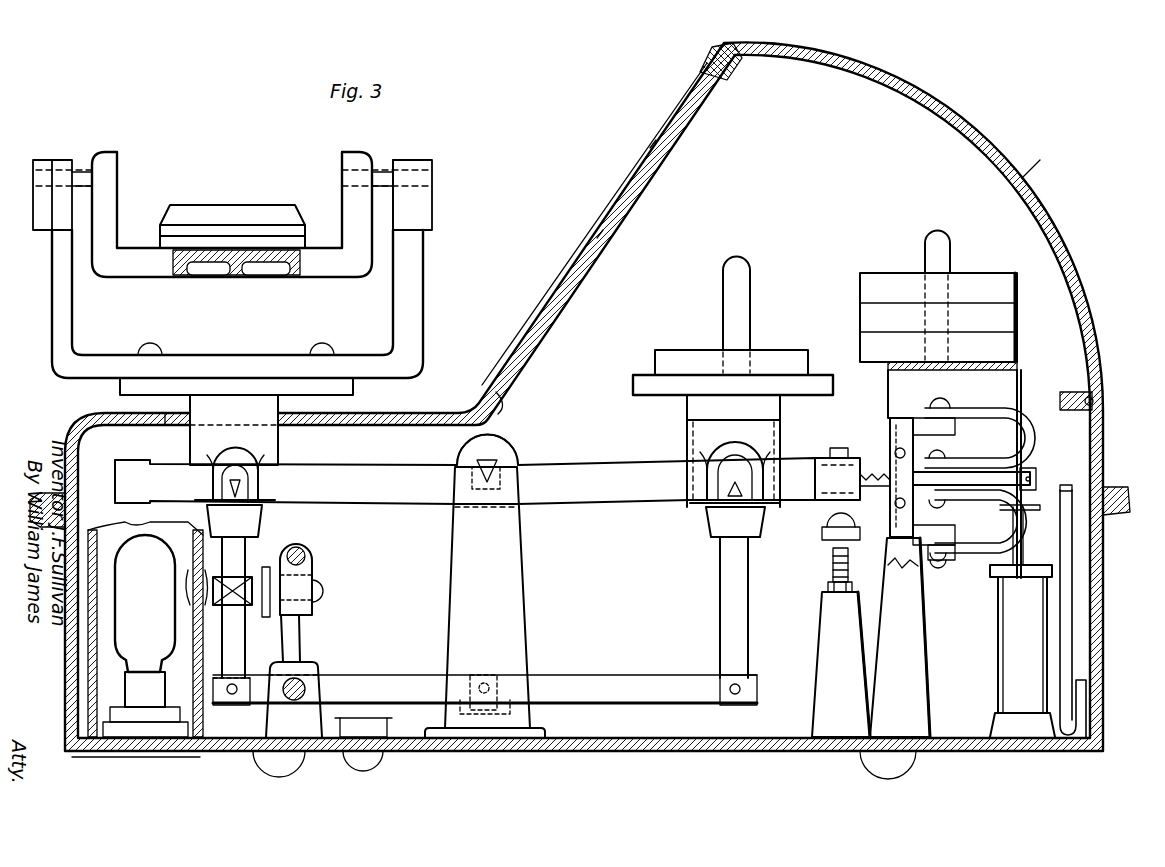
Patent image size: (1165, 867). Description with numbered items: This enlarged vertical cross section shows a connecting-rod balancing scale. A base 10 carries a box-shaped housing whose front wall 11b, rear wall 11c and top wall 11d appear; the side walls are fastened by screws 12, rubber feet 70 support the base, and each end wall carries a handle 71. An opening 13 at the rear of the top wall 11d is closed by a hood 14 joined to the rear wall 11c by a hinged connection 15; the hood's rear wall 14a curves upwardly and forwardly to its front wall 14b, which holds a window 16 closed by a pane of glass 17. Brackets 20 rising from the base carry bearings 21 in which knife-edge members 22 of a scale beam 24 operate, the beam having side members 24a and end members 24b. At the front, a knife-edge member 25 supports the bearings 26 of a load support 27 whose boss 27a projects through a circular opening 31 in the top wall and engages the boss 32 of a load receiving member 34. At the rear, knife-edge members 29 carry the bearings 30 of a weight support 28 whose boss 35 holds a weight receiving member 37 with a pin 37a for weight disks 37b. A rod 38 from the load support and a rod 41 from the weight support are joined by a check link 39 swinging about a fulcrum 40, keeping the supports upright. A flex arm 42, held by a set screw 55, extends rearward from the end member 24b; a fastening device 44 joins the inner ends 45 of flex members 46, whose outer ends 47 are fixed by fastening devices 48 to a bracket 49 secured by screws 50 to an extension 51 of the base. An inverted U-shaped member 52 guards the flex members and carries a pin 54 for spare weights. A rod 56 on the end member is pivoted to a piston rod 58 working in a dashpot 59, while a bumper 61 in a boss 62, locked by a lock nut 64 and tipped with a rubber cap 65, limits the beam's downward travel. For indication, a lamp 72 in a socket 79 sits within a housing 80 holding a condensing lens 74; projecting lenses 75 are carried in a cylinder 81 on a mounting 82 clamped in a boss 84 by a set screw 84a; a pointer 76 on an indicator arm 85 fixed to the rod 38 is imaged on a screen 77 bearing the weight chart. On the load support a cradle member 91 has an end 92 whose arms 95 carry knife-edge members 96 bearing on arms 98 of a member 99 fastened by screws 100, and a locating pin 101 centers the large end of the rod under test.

The base 10 is at (615, 752).
The front wall 11b is at (70, 752).
The rear wall 11c is at (1105, 614).
The top wall 11d is at (385, 415).
The screws 12 is at (365, 770).
The opening 13 is at (500, 400).
The hood or housing extension 14 is at (1070, 229).
The rear wall of hood 14a is at (1022, 178).
The front wall of hood 14b is at (690, 103).
The hinged connection 15 is at (1095, 400).
The window or sight opening 16 is at (650, 148).
The pane of transparent glass 17 is at (597, 238).
The brackets 20 is at (508, 592).
The bearing 21 is at (470, 490).
The knife-edge members 22 is at (500, 478).
The scale beam 24 is at (561, 450).
The side members 24a is at (372, 525).
The end members 24b is at (818, 455).
The knife-edge member 25 is at (233, 488).
The bearings 26 is at (245, 472).
The load support or outrider 27 is at (263, 523).
The boss 27a is at (235, 456).
The weight support or outrider 28 is at (735, 461).
The knife-edge members 29 is at (710, 519).
The bearings 30 is at (728, 462).
The circular opening 31 is at (160, 412).
The boss 32 is at (245, 408).
The load receiving member 34 is at (165, 385).
The boss 35 is at (690, 428).
The weight receiving member 37 is at (640, 386).
The pin 37a is at (722, 296).
The weights 37b is at (862, 352).
The rod 38 is at (258, 648).
The check link 39 is at (575, 682).
The fulcrum 40 is at (484, 705).
The rod 41 is at (722, 610).
The flex arm 42 is at (870, 473).
The fastening device 44 is at (965, 476).
The inner ends 45 is at (938, 462).
The flex members 46 is at (990, 397).
The outer ends 47 is at (952, 392).
The fastening devices 48 is at (935, 402).
The bracket 49 is at (893, 432).
The screws 50 is at (895, 500).
The extension 51 is at (922, 655).
The inverted U-shaped member 52 is at (1021, 367).
The pin 54 is at (933, 244).
The set screw 55 is at (846, 455).
The rod 56 is at (1032, 470).
The piston rod 58 is at (1025, 549).
The dashpot 59 is at (1022, 651).
The bumper 61 is at (835, 561).
The boss 62 is at (822, 616).
The lock nut 64 is at (830, 588).
The rubber cap 65 is at (830, 524).
The rubber feet 70 is at (905, 770).
The handle 71 is at (45, 502).
The source of light 72 is at (145, 603).
The condensing lens 74 is at (200, 588).
The projecting lenses 75 is at (315, 578).
The pointer or indicating needle 76 is at (240, 578).
The stationary member or screen 77 is at (1072, 653).
The socket 79 is at (145, 704).
The housing 80 is at (208, 748).
The cylinder 81 is at (323, 600).
The mounting 82 is at (300, 661).
The boss 84 is at (272, 722).
The set screw 84a is at (306, 689).
The indicator arm 85 is at (200, 590).
The cradle member 91 is at (265, 270).
The end of cradle 92 is at (162, 270).
The arms 95 is at (118, 160).
The knife-edge members 96 is at (82, 172).
The arms 98 is at (52, 298).
The member 99 is at (222, 362).
The screws 100 is at (140, 345).
The locating pin or rod pilot 101 is at (222, 210).